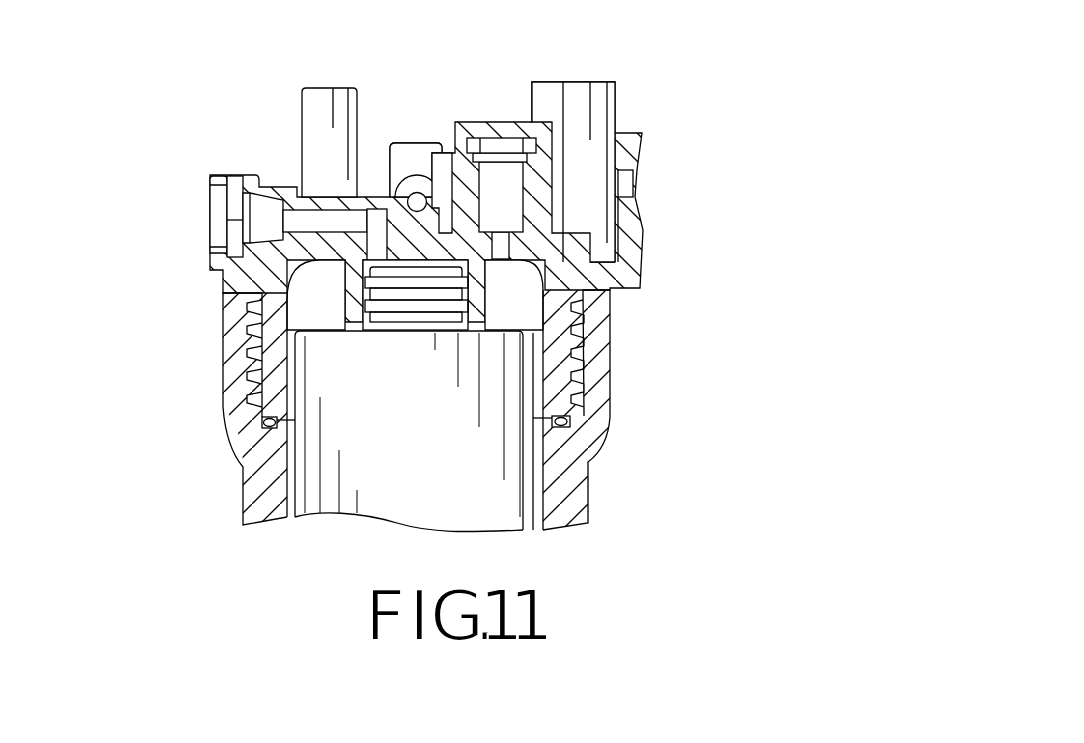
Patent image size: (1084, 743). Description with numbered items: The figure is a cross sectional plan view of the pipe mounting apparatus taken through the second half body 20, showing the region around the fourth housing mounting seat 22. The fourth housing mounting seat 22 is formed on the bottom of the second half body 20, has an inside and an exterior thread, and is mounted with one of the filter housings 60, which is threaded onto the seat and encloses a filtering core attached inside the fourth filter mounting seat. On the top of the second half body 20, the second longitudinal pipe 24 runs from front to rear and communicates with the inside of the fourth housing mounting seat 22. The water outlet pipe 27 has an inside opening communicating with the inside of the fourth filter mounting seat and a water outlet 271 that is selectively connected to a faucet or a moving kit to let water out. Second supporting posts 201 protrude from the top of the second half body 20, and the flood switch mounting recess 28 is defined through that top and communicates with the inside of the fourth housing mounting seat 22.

The second half body 20 is at (230, 278).
The second supporting posts 201 is at (313, 103).
The fourth housing mounting seat 22 is at (245, 377).
The second longitudinal pipe 24 is at (414, 183).
The water outlet pipe 27 is at (330, 200).
The water outlet 271 is at (213, 213).
The flood switch mounting recess 28 is at (508, 143).
The filter housings 60 is at (583, 485).